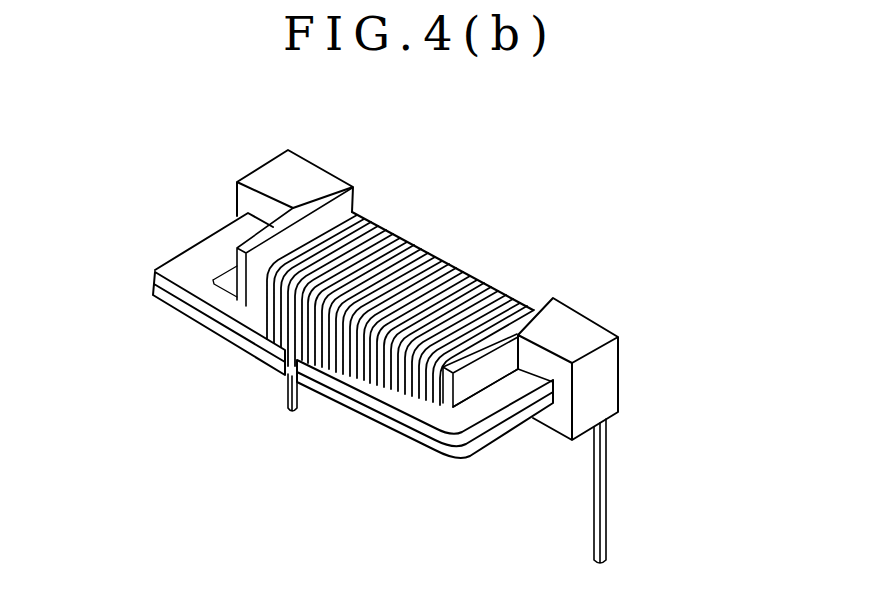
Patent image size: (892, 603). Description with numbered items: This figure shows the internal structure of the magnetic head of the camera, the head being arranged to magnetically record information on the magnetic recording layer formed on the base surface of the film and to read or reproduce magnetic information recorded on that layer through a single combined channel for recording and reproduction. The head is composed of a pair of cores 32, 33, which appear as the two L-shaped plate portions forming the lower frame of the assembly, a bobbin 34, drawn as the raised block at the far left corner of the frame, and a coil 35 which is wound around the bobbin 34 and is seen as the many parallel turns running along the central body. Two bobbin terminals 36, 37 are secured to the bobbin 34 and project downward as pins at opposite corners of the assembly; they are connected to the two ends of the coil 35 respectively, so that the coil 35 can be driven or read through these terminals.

The core 32 is at (483, 412).
The core 33 is at (200, 257).
The bobbin 34 is at (310, 178).
The coil 35 is at (450, 268).
The bobbin terminal 36 is at (605, 493).
The bobbin terminal 37 is at (298, 405).